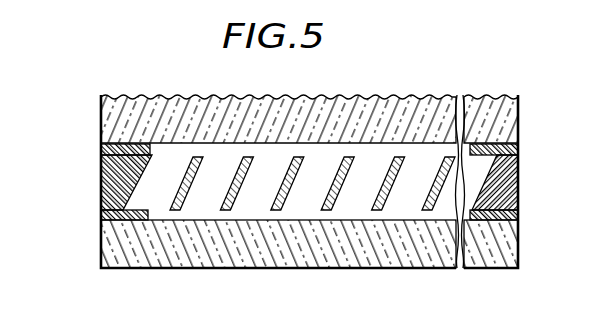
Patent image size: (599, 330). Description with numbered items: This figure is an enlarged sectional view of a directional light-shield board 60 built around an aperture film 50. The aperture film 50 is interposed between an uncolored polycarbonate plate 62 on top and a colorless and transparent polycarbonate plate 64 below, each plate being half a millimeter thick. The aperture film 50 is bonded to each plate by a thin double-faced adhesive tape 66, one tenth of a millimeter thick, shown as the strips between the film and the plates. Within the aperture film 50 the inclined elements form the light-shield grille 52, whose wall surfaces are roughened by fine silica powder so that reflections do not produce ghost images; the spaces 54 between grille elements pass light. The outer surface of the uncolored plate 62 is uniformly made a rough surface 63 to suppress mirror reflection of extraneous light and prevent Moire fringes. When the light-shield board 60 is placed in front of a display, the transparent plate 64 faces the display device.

The aperture film 50 is at (101, 183).
The light-shield grille 52 is at (283, 203).
The space between fibers 54 is at (250, 200).
The directional light-shield board 60 is at (380, 91).
The uncolored polycarbonate plate 62 is at (168, 97).
The rough surface 63 is at (443, 96).
The colorless and transparent polycarbonate plate 64 is at (152, 254).
The double-faced adhesive tape 66 is at (101, 150).